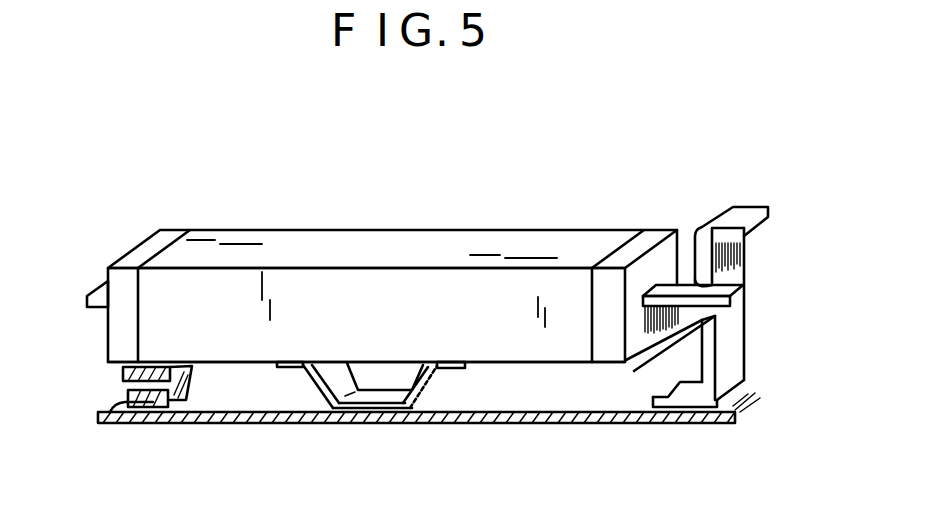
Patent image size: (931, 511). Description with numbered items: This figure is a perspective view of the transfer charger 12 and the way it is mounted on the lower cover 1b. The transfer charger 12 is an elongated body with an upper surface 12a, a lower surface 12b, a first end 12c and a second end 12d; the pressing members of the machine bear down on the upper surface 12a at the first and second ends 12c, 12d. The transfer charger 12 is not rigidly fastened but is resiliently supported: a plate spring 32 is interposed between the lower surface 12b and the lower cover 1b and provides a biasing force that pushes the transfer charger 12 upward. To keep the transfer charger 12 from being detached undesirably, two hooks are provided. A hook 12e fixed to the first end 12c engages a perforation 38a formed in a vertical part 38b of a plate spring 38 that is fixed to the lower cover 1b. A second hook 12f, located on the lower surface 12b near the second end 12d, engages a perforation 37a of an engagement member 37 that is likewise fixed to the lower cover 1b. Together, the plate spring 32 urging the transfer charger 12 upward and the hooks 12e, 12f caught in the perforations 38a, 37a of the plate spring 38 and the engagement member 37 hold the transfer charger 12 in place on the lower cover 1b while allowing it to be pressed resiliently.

The transfer charger 12 is at (295, 222).
The upper surface 12a is at (385, 236).
The lower surface 12b is at (513, 364).
The first end 12c is at (655, 229).
The second end 12d is at (165, 229).
The hook 12e is at (744, 291).
The hook 12f is at (112, 405).
The plate spring 32 is at (302, 393).
The engagement member 37 is at (122, 373).
The perforation 37a is at (127, 391).
The plate spring 38 is at (753, 258).
The perforation 38a is at (652, 378).
The vertical part 38b is at (737, 348).
The lower cover 1b is at (730, 423).